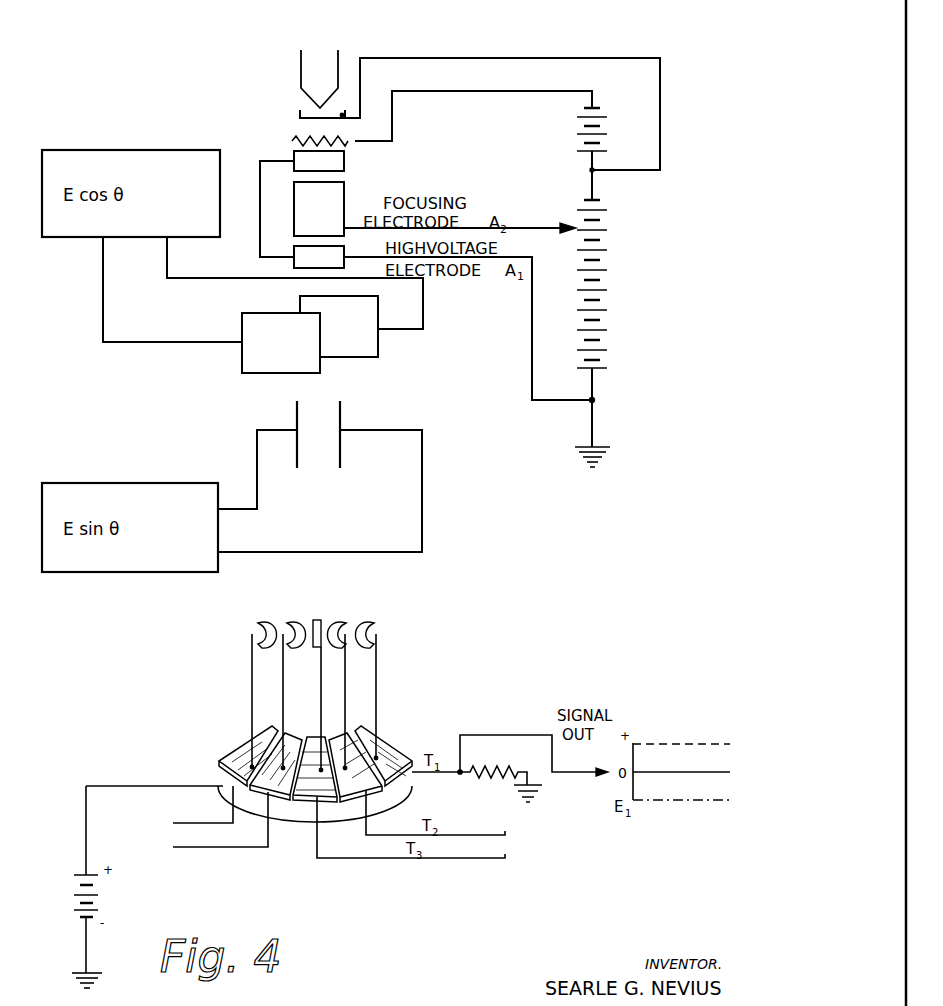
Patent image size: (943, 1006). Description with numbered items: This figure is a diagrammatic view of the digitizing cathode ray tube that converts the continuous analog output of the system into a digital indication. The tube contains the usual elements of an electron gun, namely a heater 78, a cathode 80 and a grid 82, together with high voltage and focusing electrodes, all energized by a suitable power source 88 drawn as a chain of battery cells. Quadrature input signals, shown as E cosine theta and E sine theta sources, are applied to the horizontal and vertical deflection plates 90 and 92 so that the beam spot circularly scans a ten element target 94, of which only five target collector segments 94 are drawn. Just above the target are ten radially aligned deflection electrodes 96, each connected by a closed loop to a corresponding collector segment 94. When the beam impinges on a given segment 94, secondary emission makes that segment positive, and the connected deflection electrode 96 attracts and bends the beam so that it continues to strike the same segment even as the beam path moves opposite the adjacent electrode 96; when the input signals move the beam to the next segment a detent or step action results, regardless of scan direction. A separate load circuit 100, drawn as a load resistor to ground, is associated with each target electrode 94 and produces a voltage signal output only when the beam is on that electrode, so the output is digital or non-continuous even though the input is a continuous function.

The heater 78 is at (301, 67).
The cathode 80 is at (300, 107).
The grid 82 is at (295, 138).
The power source 88 is at (607, 288).
The deflection plates 90 is at (372, 352).
The deflection plates 92 is at (343, 418).
The target collector segment 94 is at (395, 742).
The deflection electrode 96 is at (366, 623).
The load circuit 100 is at (502, 778).